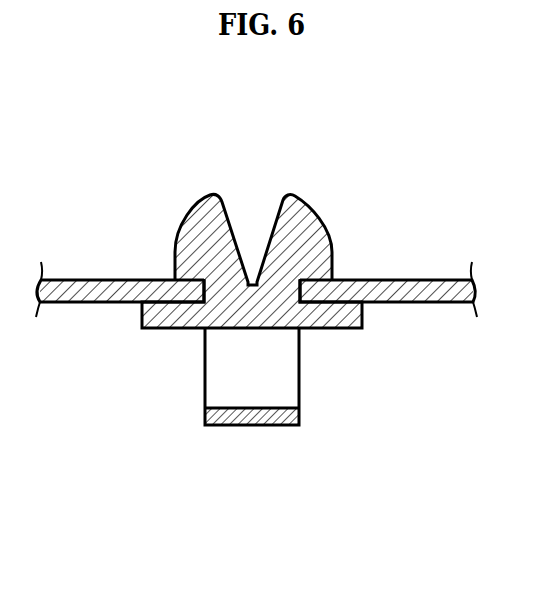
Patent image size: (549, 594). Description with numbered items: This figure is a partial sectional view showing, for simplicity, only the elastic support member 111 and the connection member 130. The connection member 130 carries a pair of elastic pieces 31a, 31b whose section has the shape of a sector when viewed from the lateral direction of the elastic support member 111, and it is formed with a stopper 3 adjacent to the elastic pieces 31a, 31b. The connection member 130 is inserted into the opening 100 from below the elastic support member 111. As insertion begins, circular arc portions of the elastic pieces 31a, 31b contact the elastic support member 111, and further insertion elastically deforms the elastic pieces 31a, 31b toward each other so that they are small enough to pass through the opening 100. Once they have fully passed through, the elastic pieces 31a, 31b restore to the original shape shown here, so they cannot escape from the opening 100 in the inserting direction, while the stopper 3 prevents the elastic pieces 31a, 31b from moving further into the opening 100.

The stopper 3 is at (142, 321).
The elastic piece 31a is at (206, 198).
The elastic piece 31b is at (290, 197).
The opening 100 is at (307, 292).
The elastic support member 111 is at (95, 279).
The connection member 130 is at (249, 444).